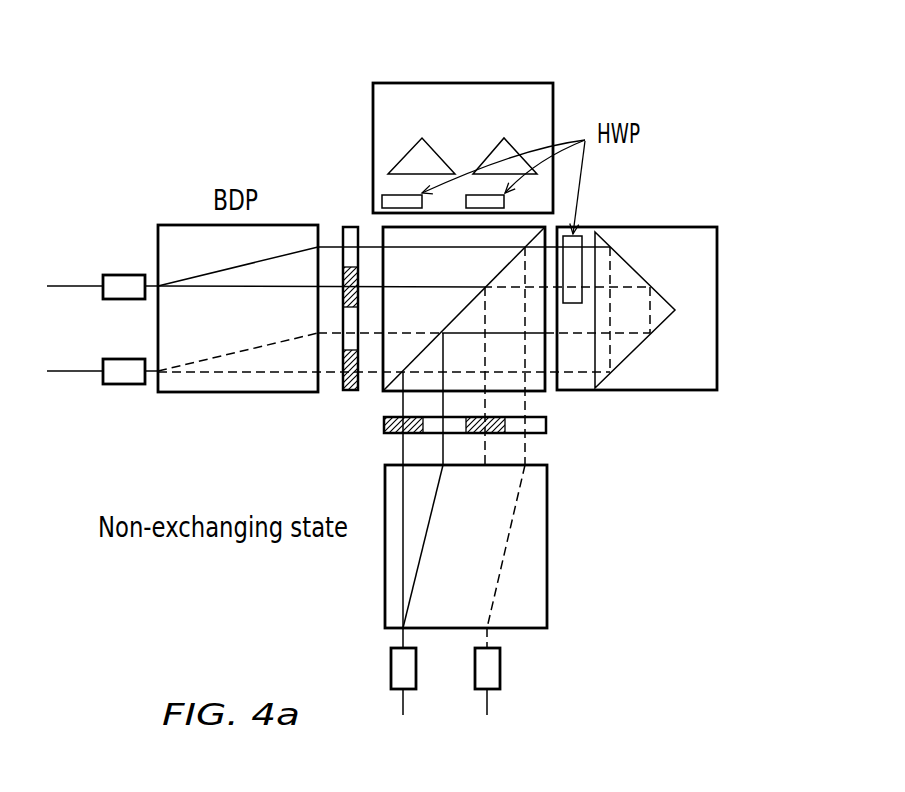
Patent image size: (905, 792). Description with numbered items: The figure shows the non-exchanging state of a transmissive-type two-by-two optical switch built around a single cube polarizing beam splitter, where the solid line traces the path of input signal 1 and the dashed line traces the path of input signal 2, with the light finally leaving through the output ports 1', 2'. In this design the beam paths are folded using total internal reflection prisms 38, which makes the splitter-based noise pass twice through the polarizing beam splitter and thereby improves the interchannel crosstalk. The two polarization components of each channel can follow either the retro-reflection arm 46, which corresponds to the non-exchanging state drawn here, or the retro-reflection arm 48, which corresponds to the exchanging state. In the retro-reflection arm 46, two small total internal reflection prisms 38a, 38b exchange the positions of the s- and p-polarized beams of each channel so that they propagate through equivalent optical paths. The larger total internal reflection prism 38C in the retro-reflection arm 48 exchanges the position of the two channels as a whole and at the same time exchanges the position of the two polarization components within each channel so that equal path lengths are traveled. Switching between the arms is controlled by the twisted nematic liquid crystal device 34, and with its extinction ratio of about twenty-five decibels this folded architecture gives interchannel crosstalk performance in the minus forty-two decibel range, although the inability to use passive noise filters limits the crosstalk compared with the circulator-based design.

The input signal 1 is at (92, 287).
The input signal 2 is at (92, 372).
The first output port 1' is at (403, 697).
The second output port 2' is at (487, 697).
The TNLC device 34 is at (348, 227).
The TIR prisms 38 is at (543, 83).
The small TIR prism 38a is at (505, 193).
The small TIR prism 38b is at (422, 193).
The larger TIR prism 38C is at (675, 310).
The retro-reflection arm 46 is at (387, 83).
The retro-reflection arm 48 is at (718, 360).